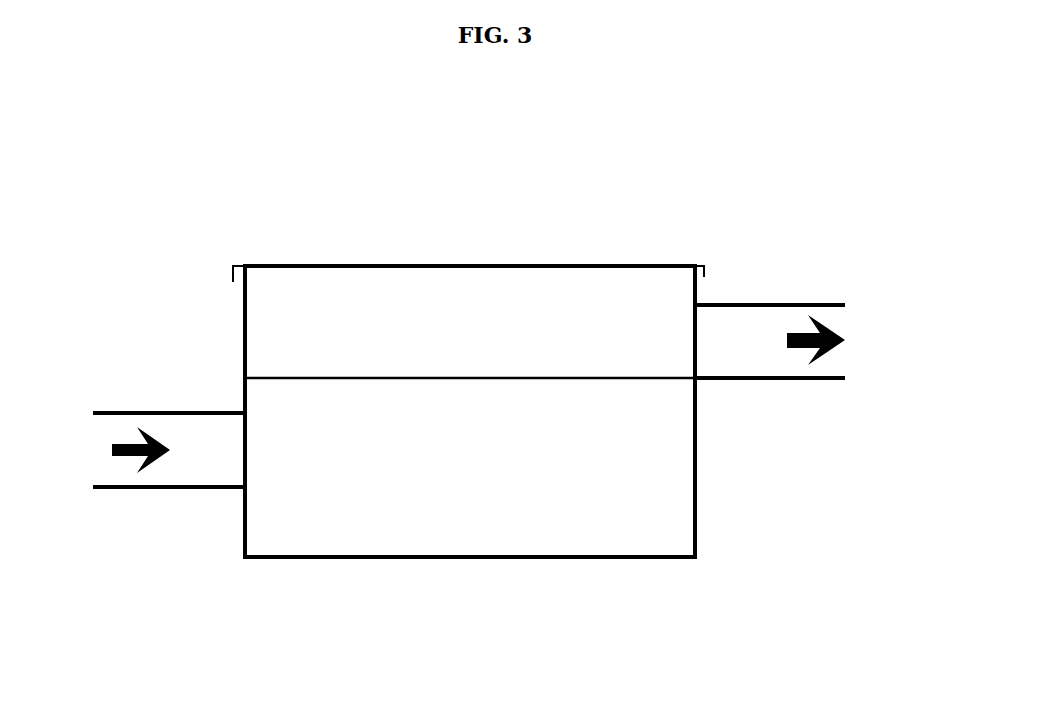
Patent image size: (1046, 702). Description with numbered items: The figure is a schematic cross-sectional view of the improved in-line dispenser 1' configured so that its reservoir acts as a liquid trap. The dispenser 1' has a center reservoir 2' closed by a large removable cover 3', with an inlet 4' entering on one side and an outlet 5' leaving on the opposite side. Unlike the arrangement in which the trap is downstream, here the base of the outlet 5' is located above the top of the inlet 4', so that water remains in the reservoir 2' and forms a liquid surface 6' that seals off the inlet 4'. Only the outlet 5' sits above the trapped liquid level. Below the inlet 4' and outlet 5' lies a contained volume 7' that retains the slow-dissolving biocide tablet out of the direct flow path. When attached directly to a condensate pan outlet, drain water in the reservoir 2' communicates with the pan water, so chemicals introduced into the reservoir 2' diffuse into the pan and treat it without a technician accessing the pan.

The dispenser 1' is at (468, 322).
The reservoir 2' is at (470, 323).
The removable cover 3' is at (470, 214).
The inlet 4' is at (143, 447).
The outlet 5' is at (825, 332).
The liquid surface 6' is at (515, 259).
The contained volume 7' is at (507, 603).